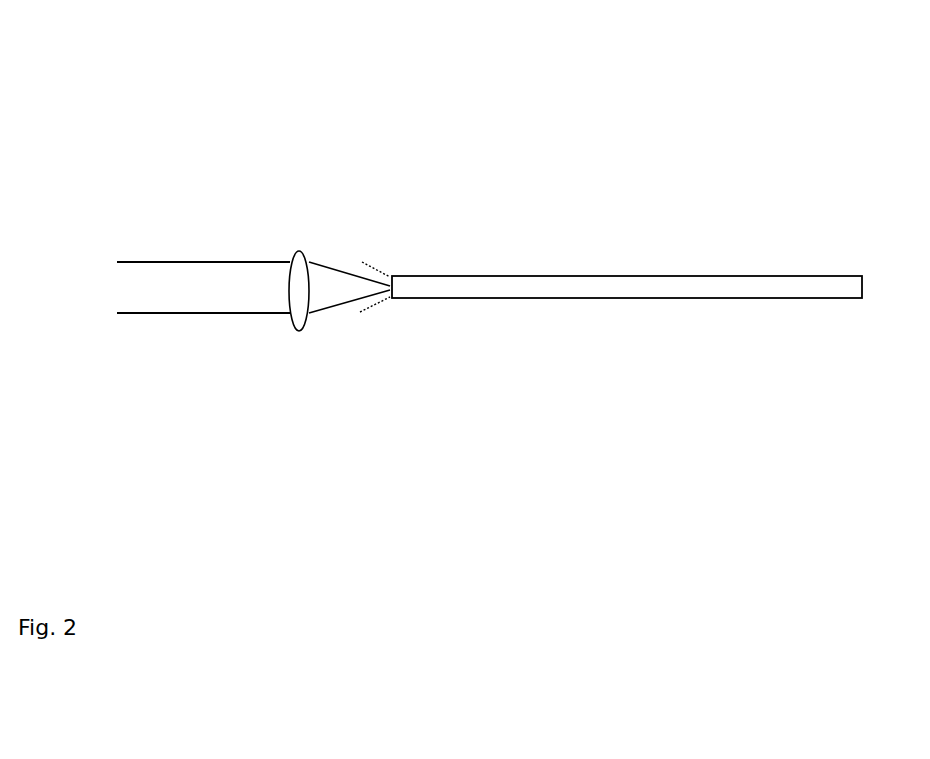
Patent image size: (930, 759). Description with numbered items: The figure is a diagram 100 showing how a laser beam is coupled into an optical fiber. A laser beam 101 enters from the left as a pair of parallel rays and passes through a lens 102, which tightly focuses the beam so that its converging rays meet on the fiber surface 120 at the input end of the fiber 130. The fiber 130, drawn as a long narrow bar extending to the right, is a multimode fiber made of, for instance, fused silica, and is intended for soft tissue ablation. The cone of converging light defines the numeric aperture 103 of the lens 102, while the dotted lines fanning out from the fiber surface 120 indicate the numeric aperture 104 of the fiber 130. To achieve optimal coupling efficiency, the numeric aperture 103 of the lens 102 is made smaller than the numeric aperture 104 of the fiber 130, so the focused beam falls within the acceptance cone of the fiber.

The diagram 100 is at (104, 95).
The laser beam 101 is at (200, 262).
The lens 102 is at (300, 330).
The numeric aperture of the lens 103 is at (353, 272).
The numeric aperture of the fiber 104 is at (372, 307).
The fiber surface 120 is at (392, 289).
The fiber 130 is at (520, 298).